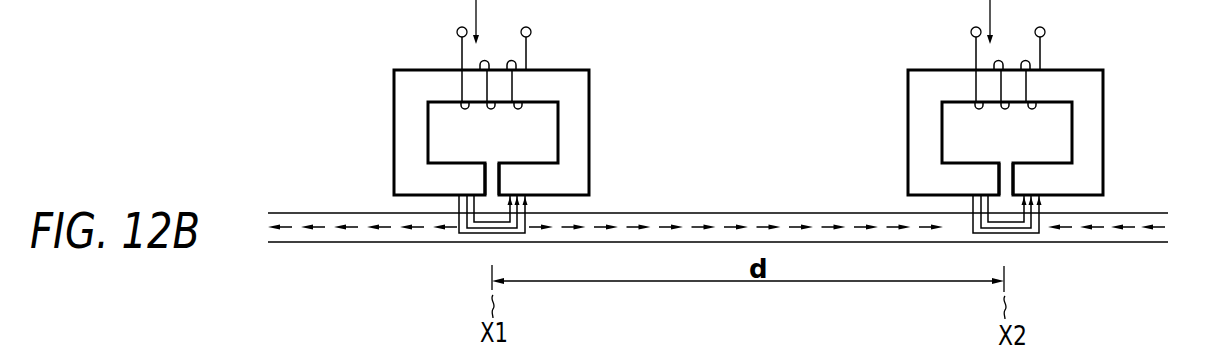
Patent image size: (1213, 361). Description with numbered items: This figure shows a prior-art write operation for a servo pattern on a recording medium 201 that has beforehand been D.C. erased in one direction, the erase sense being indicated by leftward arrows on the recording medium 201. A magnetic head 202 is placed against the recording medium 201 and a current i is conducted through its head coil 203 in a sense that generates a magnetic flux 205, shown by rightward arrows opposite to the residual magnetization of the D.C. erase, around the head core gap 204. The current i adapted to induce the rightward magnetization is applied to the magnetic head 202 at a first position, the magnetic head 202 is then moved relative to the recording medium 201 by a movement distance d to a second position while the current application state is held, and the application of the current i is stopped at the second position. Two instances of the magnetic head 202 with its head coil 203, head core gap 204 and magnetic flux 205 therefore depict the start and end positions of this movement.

The recording medium 201 is at (1160, 212).
The magnetic head 202 is at (575, 82).
The head coil 203 is at (460, 48).
The head core gap 204 is at (490, 172).
The magnetic flux 205 is at (470, 234).